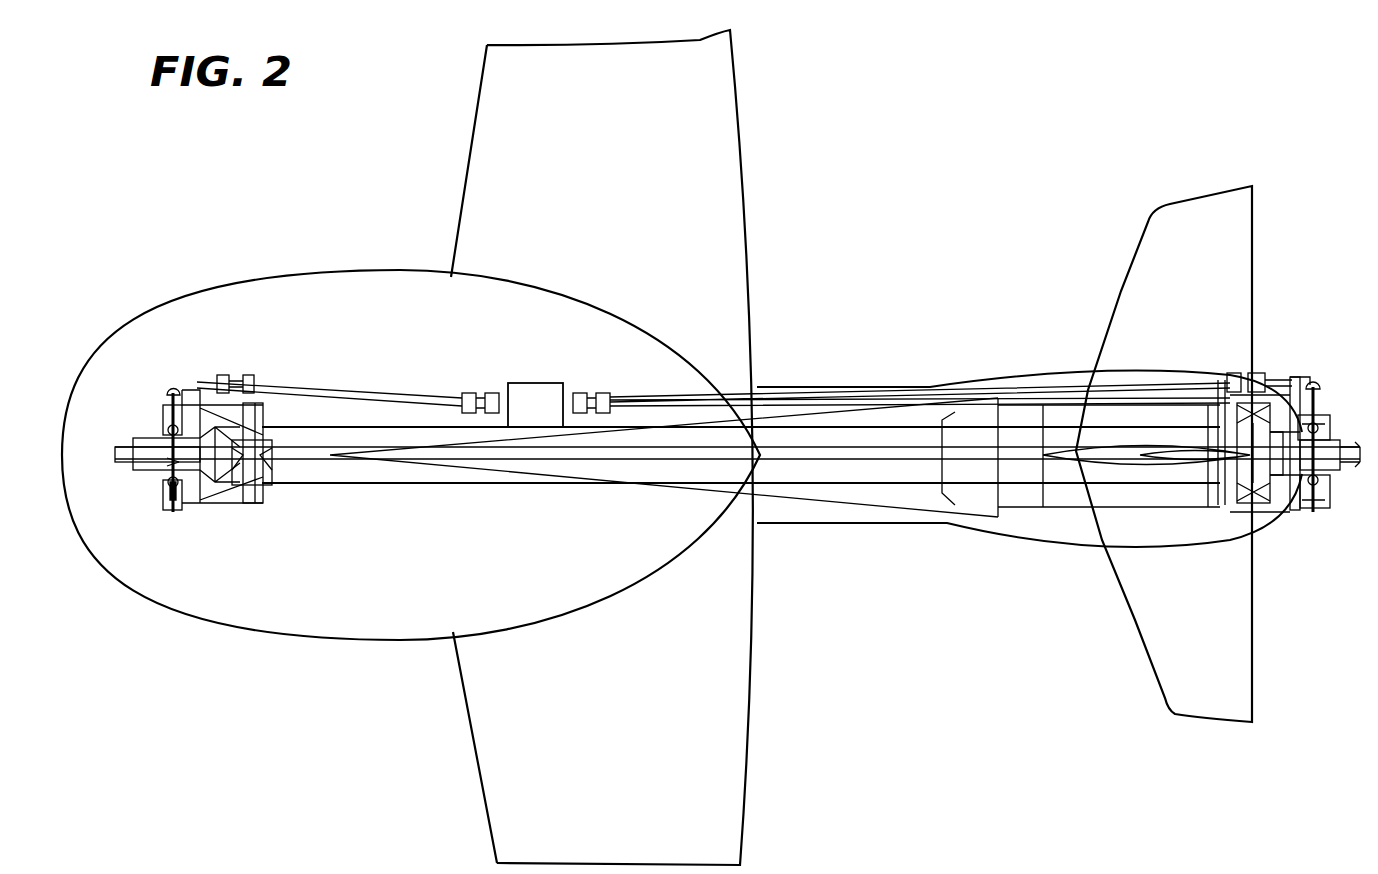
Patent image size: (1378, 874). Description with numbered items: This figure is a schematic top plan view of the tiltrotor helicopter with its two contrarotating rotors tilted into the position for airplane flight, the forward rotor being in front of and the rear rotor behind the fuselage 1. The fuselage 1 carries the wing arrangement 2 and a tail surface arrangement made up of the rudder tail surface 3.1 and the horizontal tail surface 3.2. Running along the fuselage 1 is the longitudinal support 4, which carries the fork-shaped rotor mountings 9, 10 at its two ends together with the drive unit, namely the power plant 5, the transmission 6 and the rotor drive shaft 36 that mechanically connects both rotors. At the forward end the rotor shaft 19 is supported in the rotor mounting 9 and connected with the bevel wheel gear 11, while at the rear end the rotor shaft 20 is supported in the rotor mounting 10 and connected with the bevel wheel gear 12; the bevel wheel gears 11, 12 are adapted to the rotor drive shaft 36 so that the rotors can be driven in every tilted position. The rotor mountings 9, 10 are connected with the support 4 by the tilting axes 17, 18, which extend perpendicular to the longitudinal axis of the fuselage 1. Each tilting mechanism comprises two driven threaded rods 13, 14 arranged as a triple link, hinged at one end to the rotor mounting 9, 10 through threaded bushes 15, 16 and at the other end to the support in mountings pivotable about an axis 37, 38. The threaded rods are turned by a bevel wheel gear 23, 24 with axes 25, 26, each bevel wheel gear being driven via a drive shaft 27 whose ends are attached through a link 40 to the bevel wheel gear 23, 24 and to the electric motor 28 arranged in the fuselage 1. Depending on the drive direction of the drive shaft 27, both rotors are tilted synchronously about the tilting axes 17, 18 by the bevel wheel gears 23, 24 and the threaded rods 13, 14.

The fuselage 1 is at (237, 586).
The wing arrangement 2 is at (708, 733).
The rudder tail surface 3.1 is at (1113, 448).
The horizontal tail surface 3.2 is at (1162, 228).
The longitudinal support 4 is at (862, 437).
The power plant 5 is at (1020, 437).
The transmission 6 is at (978, 435).
The rotor mounting 9 is at (145, 438).
The rotor mounting 10 is at (1322, 445).
The bevel wheel gear 11 is at (270, 470).
The bevel wheel gear 12 is at (1215, 497).
The threaded rod 13 is at (1294, 420).
The threaded rod 14 is at (176, 408).
The threaded bush 15 is at (1325, 430).
The threaded bush 16 is at (169, 426).
The tilting axis 17 is at (192, 382).
The tilting axis 18 is at (1220, 400).
The rotor shaft 19 is at (130, 440).
The rotor shaft 20 is at (1350, 448).
The bevel wheel gear 23 is at (165, 470).
The bevel wheel gear 24 is at (1326, 490).
The axis 25 is at (1300, 520).
The axis 26 is at (175, 520).
The drive shaft 27 is at (383, 394).
The electric motor 28 is at (537, 385).
The rotor drive shaft 36 is at (300, 455).
The axis 37 is at (1313, 387).
The axis 38 is at (173, 392).
The link 40 is at (226, 375).